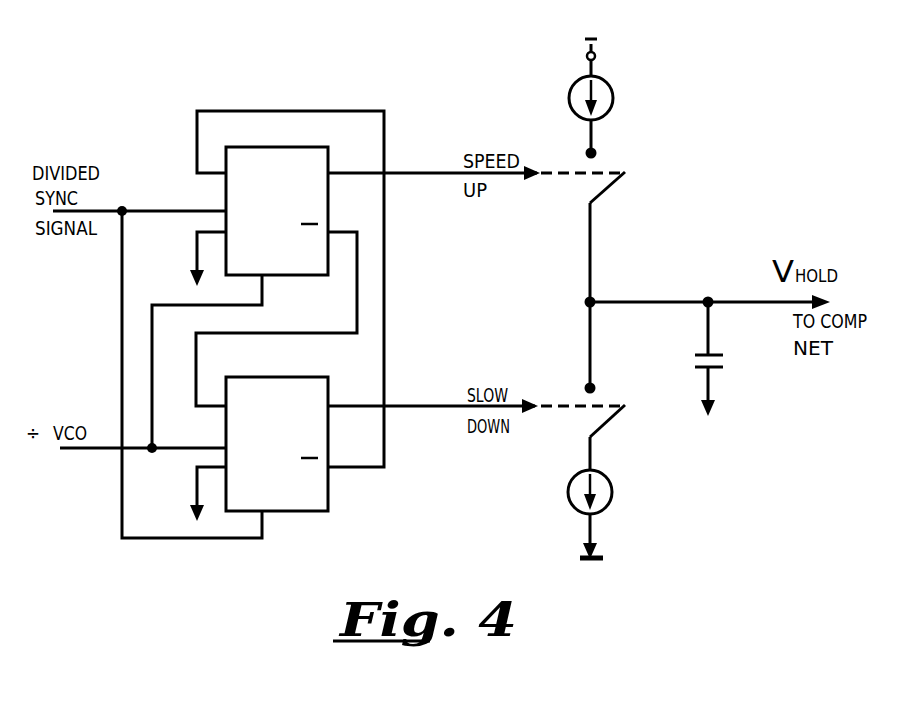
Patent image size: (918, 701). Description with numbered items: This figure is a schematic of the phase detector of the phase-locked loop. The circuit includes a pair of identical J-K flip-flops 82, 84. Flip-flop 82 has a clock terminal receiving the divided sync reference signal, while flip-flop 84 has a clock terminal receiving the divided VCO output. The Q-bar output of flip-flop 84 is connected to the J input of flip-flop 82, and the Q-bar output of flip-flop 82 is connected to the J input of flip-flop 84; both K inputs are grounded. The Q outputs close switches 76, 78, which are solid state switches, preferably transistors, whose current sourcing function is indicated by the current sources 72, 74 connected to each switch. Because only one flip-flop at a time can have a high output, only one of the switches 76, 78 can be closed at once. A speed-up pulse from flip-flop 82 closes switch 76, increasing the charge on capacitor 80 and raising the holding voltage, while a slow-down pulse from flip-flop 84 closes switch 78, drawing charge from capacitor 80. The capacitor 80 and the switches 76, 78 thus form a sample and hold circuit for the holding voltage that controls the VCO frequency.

The current source 72 is at (627, 70).
The current source 74 is at (608, 508).
The switch 76 is at (603, 194).
The switch 78 is at (603, 431).
The capacitor 80 is at (727, 360).
The J-K flip-flop 82 is at (329, 206).
The J-K flip-flop 84 is at (329, 445).